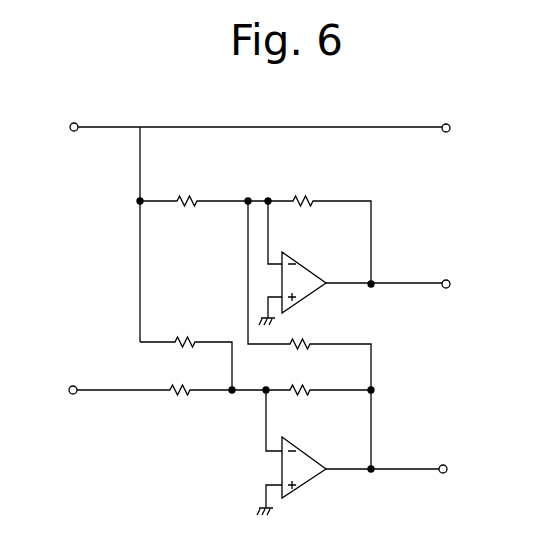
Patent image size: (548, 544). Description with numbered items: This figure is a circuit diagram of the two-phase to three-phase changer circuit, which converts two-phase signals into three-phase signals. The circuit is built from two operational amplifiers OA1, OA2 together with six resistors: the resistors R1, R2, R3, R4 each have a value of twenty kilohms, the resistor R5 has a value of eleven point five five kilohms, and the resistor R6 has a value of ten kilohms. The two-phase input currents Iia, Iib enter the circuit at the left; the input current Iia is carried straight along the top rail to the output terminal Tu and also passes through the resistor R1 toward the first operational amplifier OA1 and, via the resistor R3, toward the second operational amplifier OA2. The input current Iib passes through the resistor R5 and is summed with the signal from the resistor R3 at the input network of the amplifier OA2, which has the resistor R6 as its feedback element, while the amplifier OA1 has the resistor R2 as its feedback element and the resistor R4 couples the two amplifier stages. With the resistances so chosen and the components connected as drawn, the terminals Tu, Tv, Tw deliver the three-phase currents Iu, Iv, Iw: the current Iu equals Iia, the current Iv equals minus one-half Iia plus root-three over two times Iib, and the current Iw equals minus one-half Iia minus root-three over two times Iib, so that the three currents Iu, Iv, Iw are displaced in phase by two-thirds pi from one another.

The two-phase input current Iia is at (236, 126).
The two-phase input current Iib is at (100, 389).
The terminal Tu is at (431, 116).
The terminal Tv is at (433, 273).
The terminal Tw is at (429, 458).
The three-phase current Iu is at (474, 126).
The three-phase current Iv is at (472, 283).
The three-phase current Iw is at (467, 477).
The resistor R1 is at (194, 200).
The resistor R2 is at (309, 227).
The resistor R3 is at (186, 352).
The resistor R4 is at (309, 335).
The resistor R5 is at (200, 393).
The resistor R6 is at (318, 392).
The operational amplifier OA1 is at (305, 272).
The operational amplifier OA2 is at (305, 460).